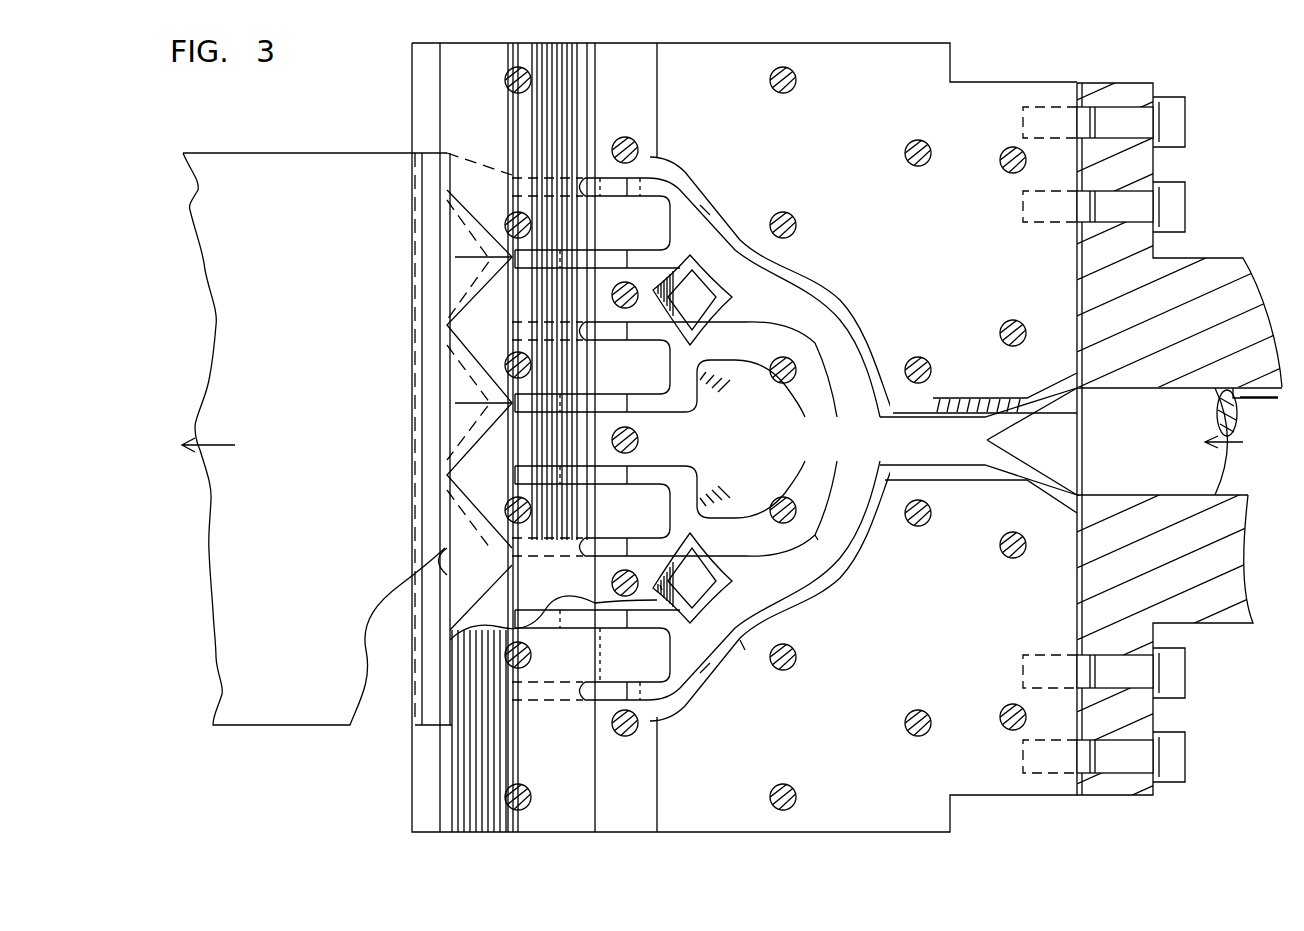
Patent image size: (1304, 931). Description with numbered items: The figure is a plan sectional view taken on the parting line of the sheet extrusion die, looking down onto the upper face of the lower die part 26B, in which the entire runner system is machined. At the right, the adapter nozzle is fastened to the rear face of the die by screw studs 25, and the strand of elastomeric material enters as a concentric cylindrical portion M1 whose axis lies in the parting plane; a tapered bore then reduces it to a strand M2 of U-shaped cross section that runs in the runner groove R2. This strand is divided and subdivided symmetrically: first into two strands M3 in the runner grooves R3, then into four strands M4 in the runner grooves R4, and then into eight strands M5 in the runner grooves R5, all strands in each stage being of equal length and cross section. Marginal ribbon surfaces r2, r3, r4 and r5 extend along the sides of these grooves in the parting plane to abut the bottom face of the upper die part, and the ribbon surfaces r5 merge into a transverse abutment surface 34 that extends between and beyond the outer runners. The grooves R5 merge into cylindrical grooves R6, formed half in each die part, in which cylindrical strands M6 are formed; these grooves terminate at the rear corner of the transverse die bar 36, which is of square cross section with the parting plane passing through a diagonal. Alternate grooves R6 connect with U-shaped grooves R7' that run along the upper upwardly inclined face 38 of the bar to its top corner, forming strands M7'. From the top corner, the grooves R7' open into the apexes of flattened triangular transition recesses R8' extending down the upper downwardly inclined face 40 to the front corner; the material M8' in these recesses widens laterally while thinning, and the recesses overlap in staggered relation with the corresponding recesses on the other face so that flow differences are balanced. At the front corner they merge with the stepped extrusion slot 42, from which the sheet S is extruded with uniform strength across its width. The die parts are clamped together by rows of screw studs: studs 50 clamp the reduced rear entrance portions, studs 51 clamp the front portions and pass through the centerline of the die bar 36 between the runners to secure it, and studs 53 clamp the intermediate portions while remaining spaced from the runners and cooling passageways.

The screw studs 25 is at (1195, 185).
The lower die part 26B is at (860, 822).
The transverse abutment surface 34 is at (660, 790).
The transverse die bar 36 is at (545, 605).
The upper upwardly inclined face 38 is at (573, 589).
The upper downwardly inclined face 40 is at (452, 322).
The stepped extrusion slot 42 is at (420, 700).
The screw studs 50 is at (1003, 172).
The screw studs 51 is at (505, 82).
The screw studs 53 is at (905, 150).
The sheet S is at (316, 457).
The concentric cylindrical strand portion M1 is at (1140, 398).
The strand of U-shaped cross section M2 is at (955, 455).
The strands M3 is at (822, 305).
The strands M4 is at (715, 258).
The strands M5 is at (652, 160).
The cylindrical strands M6 is at (598, 178).
The strands M7' is at (596, 310).
The material in recesses R'8 M8' is at (433, 381).
The runner groove R2 is at (972, 412).
The runner grooves R3 is at (862, 340).
The runner grooves R4 is at (748, 530).
The runner grooves R5 is at (655, 650).
The cylindrical grooves R6 is at (592, 680).
The U-shaped grooves R7' is at (599, 547).
The triangular grooves or transition recesses R8' is at (414, 596).
The marginal ribbon surfaces r2 is at (938, 404).
The marginal ribbon surfaces r3 is at (812, 490).
The marginal ribbon surfaces r4 is at (740, 655).
The marginal ribbon surfaces r5 is at (656, 580).